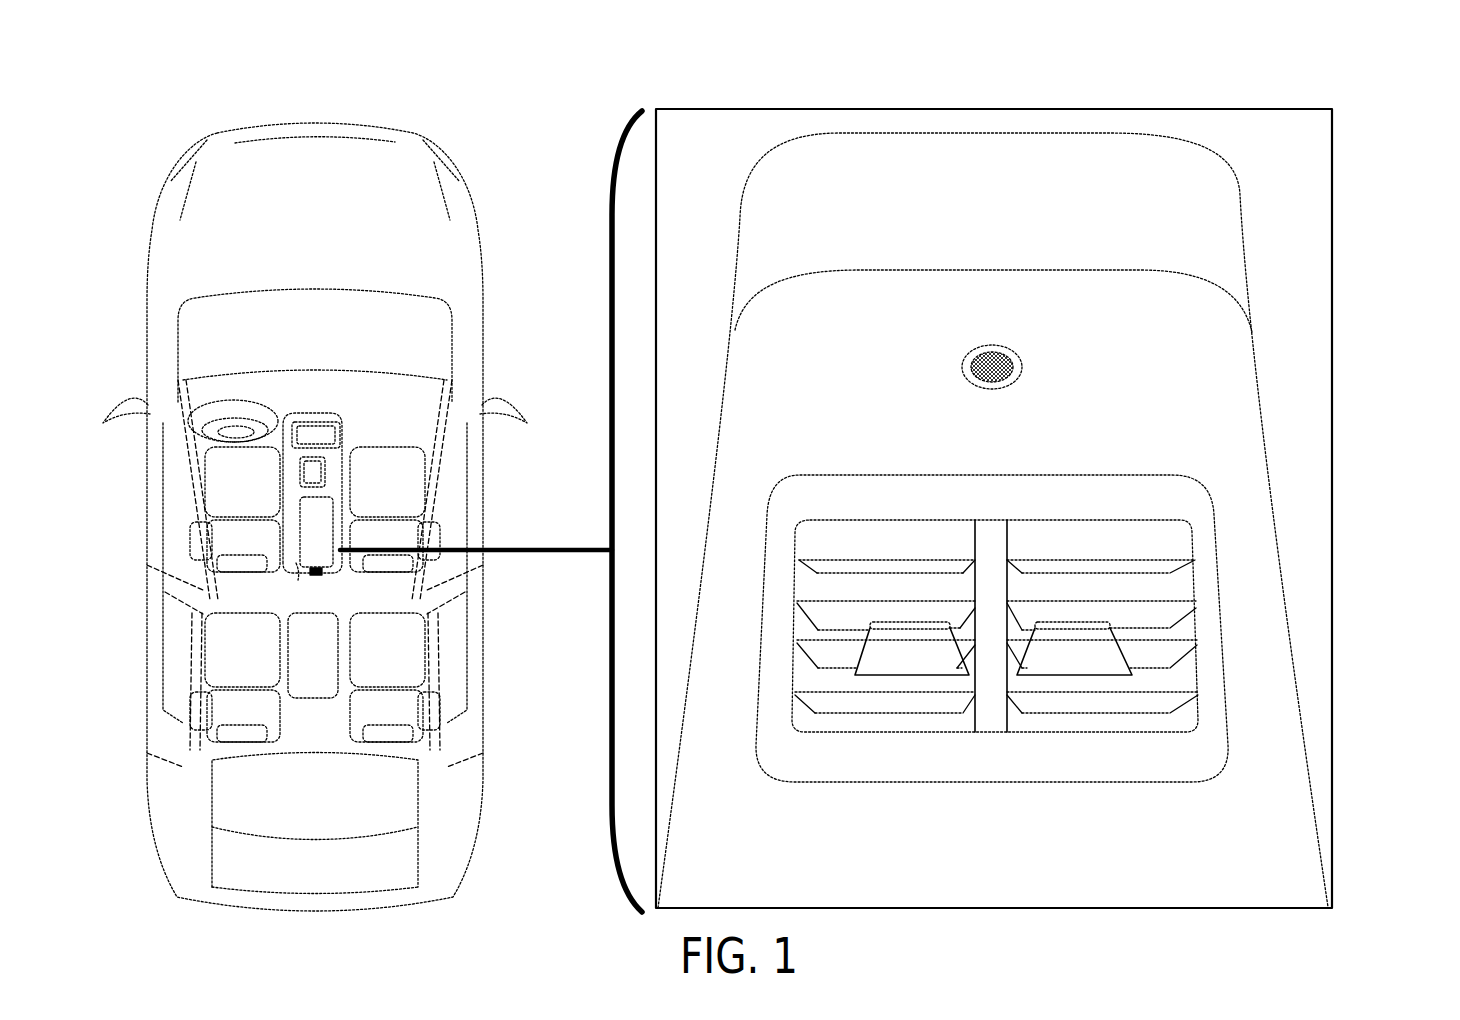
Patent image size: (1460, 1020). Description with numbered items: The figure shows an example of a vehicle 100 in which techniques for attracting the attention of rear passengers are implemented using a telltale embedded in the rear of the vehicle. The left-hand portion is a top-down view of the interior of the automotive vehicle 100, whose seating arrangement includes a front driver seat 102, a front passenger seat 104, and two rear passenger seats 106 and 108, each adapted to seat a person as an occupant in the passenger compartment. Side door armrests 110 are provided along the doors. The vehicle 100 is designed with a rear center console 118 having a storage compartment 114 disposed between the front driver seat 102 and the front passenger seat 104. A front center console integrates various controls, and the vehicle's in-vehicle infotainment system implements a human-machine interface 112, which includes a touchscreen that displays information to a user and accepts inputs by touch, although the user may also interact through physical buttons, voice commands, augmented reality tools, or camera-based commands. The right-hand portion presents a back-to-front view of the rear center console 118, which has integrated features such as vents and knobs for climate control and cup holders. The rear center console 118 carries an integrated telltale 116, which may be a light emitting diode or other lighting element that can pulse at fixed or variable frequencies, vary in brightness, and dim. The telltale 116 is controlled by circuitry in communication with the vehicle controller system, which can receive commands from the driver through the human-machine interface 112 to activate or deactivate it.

The vehicle 100 is at (1316, 103).
The front driver seat 102 is at (259, 497).
The front passenger seat 104 is at (409, 497).
The rear passenger seat 106 is at (262, 662).
The rear passenger seat 108 is at (404, 662).
The side door armrests 110 is at (175, 518).
The human-machine interface 112 is at (314, 432).
The storage compartment 114 is at (1013, 199).
The telltale 116 is at (1022, 353).
The rear center console 118 is at (745, 393).